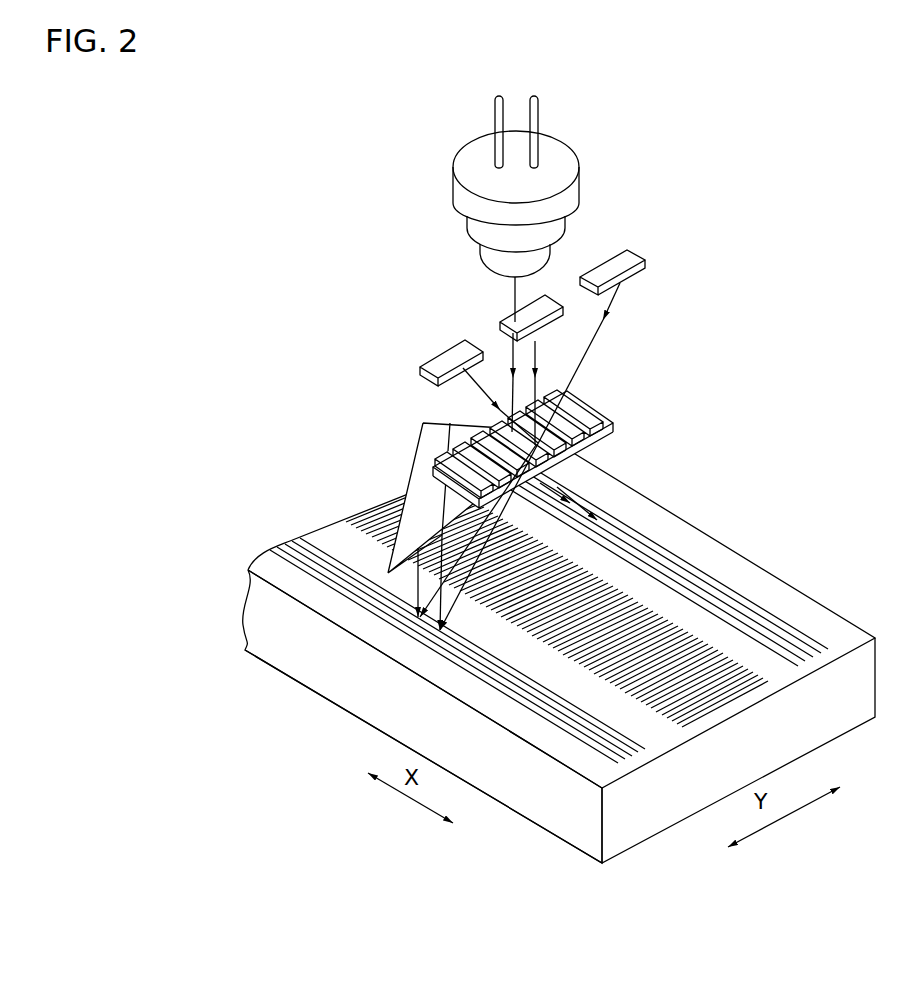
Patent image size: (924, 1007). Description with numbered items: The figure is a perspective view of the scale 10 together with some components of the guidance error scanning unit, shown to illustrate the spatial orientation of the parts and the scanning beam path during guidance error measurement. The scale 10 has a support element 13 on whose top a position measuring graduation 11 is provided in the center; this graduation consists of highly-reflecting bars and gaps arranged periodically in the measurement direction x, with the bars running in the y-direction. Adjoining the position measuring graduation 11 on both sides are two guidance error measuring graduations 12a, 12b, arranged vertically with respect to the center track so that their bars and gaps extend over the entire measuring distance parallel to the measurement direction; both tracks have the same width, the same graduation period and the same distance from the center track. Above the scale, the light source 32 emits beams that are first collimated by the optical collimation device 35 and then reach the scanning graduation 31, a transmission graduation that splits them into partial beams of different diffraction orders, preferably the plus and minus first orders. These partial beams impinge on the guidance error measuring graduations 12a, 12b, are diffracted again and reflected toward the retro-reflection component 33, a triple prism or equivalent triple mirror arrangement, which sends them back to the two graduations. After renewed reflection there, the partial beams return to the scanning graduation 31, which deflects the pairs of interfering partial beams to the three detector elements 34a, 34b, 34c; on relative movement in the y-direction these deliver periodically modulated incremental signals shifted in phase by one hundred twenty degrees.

The scale 10 is at (350, 722).
The position measuring graduation 11 is at (592, 567).
The guidance error measuring graduation 12a is at (390, 630).
The guidance error measuring graduation 12b is at (727, 548).
The support element 13 is at (520, 797).
The scanning graduation 31 is at (597, 403).
The light source 32 is at (553, 152).
The retro-reflection component 33 is at (407, 503).
The detector element 34a is at (442, 358).
The detector element 34b is at (527, 310).
The detector element 34c is at (627, 265).
The optical collimation device 35 is at (538, 262).